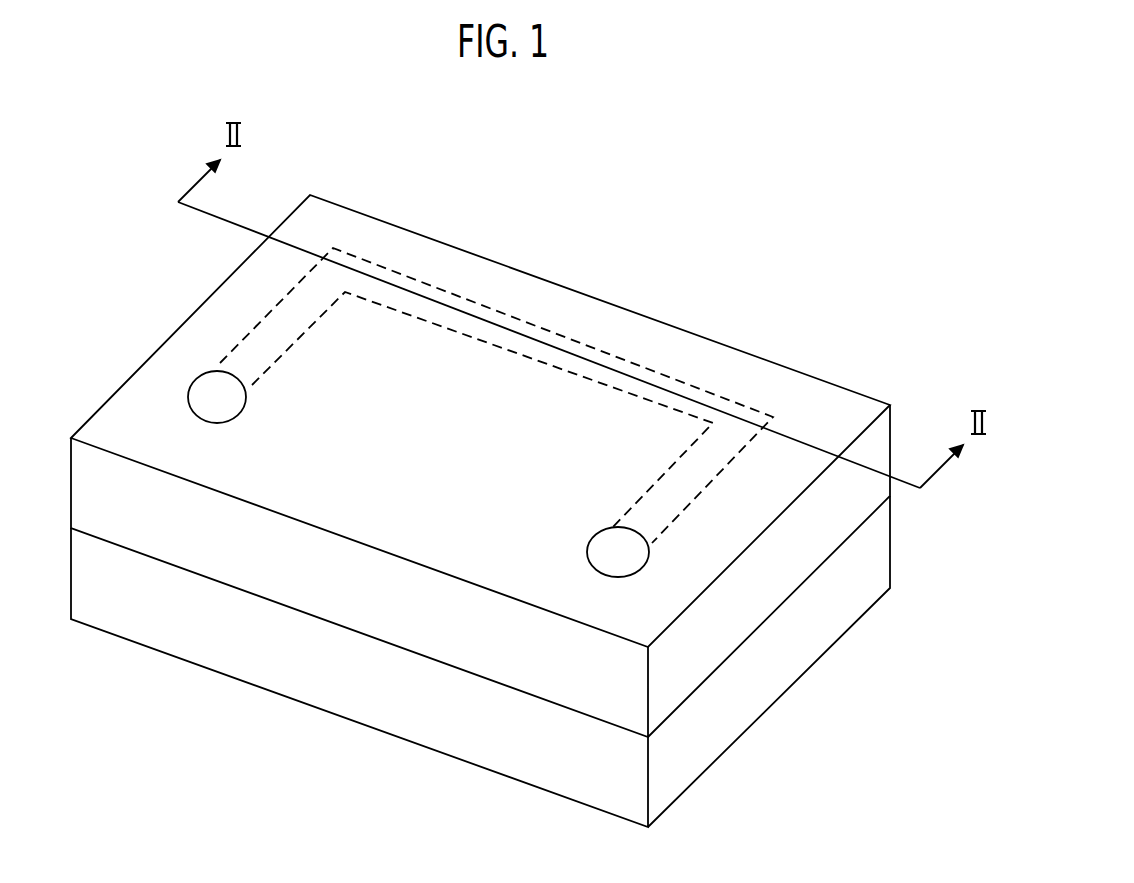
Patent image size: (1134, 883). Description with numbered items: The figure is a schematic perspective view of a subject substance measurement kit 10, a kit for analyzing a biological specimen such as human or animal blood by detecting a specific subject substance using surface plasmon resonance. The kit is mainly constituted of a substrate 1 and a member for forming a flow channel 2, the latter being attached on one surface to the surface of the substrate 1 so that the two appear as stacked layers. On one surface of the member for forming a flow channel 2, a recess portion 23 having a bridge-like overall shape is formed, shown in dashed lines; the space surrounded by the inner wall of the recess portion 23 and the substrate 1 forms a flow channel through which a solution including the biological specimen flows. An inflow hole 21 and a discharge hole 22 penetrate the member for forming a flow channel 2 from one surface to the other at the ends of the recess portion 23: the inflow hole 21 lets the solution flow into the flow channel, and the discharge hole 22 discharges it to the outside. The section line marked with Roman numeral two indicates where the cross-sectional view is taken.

The subject substance measurement kit 10 is at (562, 218).
The substrate 1 is at (680, 762).
The member for forming a flow channel 2 is at (542, 678).
The inflow hole 21 is at (618, 550).
The discharge hole 22 is at (217, 397).
The recess portion 23 is at (713, 394).